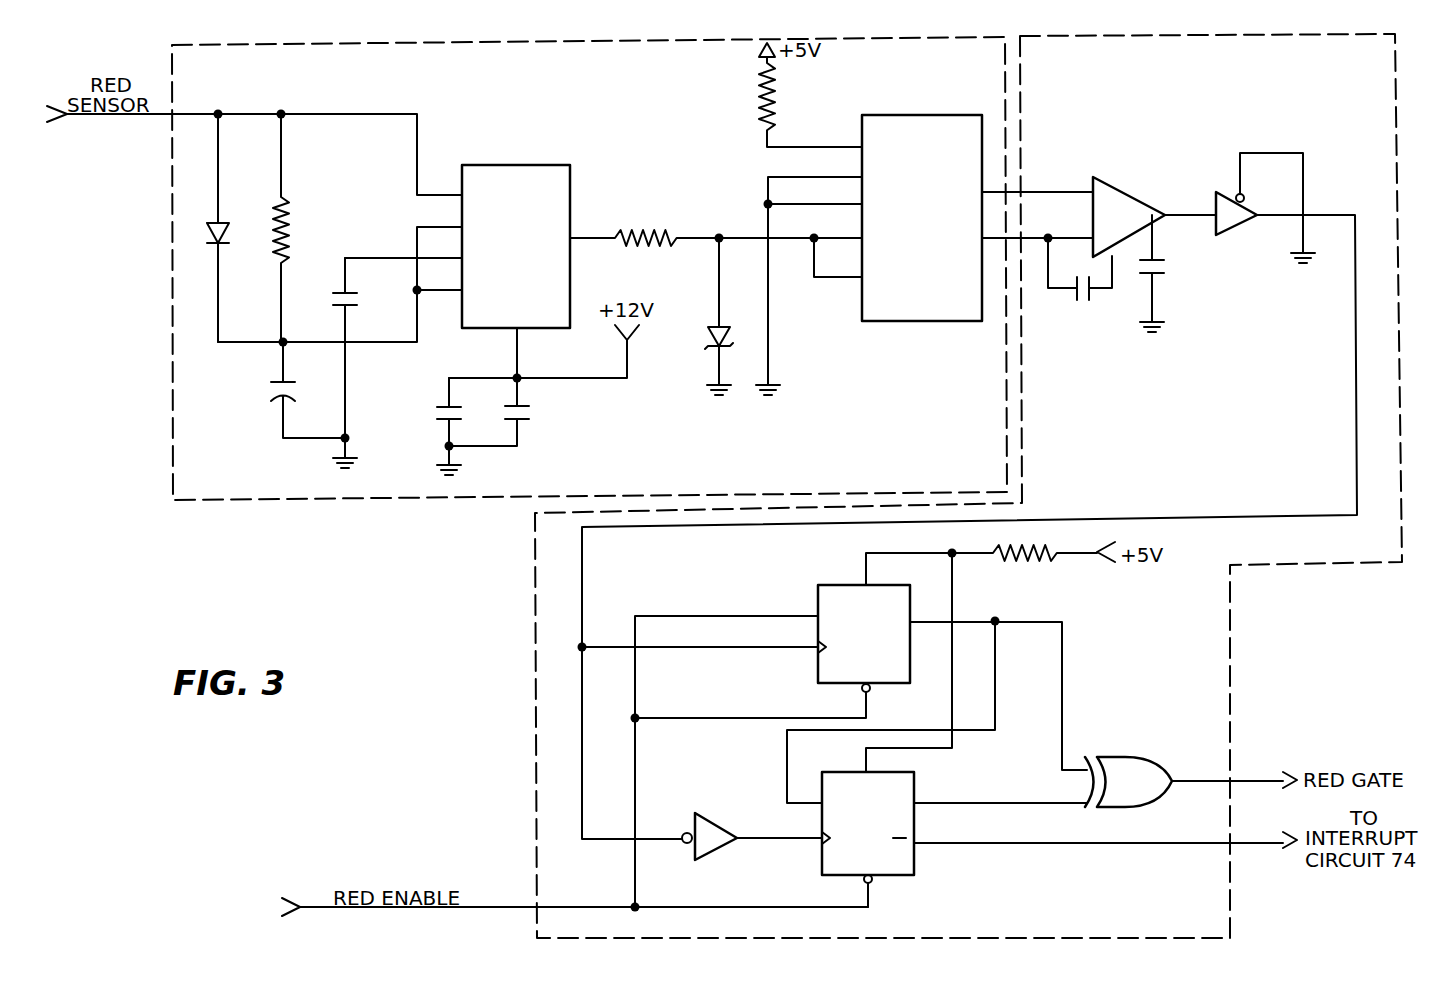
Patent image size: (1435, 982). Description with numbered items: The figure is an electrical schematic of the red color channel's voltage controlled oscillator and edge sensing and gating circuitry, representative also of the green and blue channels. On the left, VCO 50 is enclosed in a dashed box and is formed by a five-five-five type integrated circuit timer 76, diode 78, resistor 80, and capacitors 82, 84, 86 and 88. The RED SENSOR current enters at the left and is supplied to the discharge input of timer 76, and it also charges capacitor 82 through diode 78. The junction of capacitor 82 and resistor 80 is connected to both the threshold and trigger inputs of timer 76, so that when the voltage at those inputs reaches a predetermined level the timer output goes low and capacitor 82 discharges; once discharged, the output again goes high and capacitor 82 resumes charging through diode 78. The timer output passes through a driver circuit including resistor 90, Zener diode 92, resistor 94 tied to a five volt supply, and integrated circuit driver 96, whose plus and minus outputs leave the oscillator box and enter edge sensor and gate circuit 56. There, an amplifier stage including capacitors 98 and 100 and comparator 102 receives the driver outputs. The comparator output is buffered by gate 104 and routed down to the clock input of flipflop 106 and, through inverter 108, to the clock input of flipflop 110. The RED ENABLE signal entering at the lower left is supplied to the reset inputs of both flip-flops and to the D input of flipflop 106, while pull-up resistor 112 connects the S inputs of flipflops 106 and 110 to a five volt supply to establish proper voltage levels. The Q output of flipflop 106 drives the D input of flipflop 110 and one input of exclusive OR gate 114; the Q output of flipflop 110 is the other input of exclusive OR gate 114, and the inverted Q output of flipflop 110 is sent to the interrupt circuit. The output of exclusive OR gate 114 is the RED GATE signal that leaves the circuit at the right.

The VCO 50 is at (172, 318).
The edge sensor and gate circuit 56 is at (533, 622).
The integrated circuit timer 76 is at (515, 165).
The diode 78 is at (223, 222).
The resistor 80 is at (290, 213).
The capacitor 82 is at (270, 388).
The capacitor 84 is at (360, 298).
The capacitor 86 is at (437, 411).
The capacitor 88 is at (533, 412).
The resistor 90 is at (645, 225).
The Zener diode 92 is at (703, 348).
The resistor 94 is at (758, 92).
The integrated circuit driver 96 is at (903, 115).
The capacitor 98 is at (1086, 307).
The capacitor 100 is at (1167, 271).
The comparator 102 is at (1125, 192).
The gate 104 is at (1242, 230).
The flipflop 106 is at (828, 584).
The inverter 108 is at (716, 853).
The flipflop 110 is at (920, 868).
The pull-up resistor 112 is at (1043, 560).
The exclusive OR gate 114 is at (1117, 754).